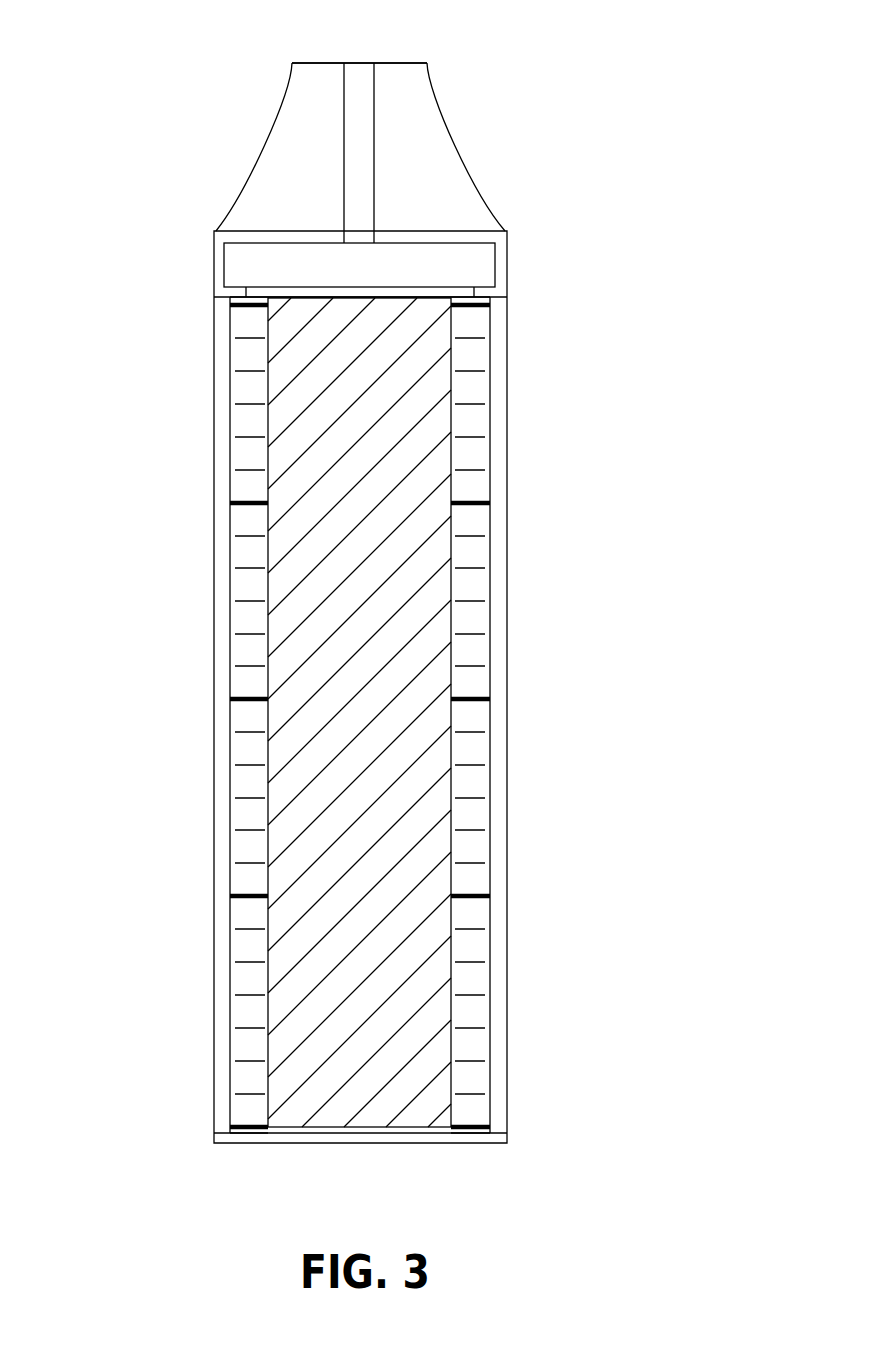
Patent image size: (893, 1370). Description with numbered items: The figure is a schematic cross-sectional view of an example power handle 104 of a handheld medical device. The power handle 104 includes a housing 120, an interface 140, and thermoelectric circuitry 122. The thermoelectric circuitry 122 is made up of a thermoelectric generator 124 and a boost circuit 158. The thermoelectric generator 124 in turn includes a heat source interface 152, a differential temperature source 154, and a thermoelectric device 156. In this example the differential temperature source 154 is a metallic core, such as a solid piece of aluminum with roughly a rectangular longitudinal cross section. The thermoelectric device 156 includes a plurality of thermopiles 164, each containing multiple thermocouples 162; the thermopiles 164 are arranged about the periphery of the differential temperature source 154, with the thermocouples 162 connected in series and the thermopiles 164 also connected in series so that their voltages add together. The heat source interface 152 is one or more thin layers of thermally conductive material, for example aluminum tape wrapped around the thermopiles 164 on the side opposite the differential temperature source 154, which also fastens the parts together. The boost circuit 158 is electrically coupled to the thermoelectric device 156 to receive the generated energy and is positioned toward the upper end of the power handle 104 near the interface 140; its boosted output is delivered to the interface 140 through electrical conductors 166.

The power handle 104 is at (117, 132).
The housing 120 is at (253, 185).
The thermoelectric circuitry 122 is at (641, 306).
The thermoelectric generator 124 is at (160, 367).
The interface 140 is at (415, 61).
The heat source interface 152 is at (218, 560).
The differential temperature source 154 is at (425, 437).
The thermoelectric device 156 is at (253, 1137).
The boost circuit 158 is at (485, 255).
The thermocouples 162 is at (238, 350).
The thermopiles 164 is at (186, 429).
The electrical conductors 166 is at (345, 138).